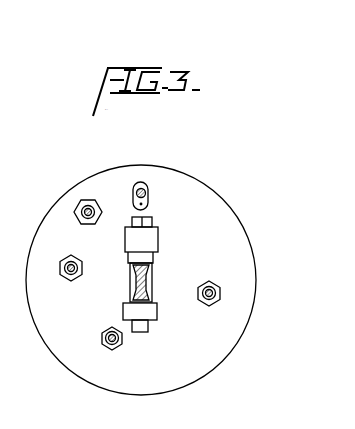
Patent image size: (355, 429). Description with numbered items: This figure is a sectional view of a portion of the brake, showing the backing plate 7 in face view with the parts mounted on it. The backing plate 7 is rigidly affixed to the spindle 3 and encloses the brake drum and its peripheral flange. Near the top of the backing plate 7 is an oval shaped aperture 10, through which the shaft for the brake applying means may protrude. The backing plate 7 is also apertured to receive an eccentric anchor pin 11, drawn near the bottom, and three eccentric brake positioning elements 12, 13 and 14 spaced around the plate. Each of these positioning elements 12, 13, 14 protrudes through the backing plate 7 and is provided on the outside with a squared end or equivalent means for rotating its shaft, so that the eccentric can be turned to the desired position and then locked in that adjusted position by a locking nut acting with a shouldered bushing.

The spindle 3 is at (158, 237).
The backing plate 7 is at (228, 230).
The oval shaped aperture 10 is at (148, 201).
The eccentric anchor pin 11 is at (103, 347).
The eccentric brake positioning element 12 is at (79, 212).
The eccentric brake positioning element 13 is at (201, 308).
The eccentric brake positioning element 14 is at (63, 280).